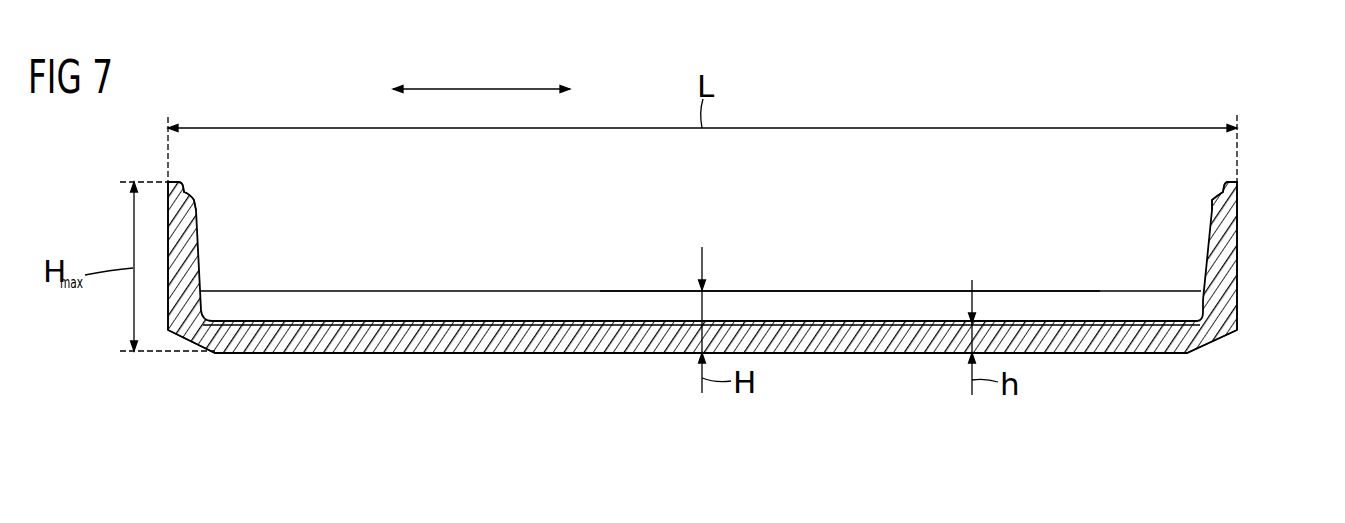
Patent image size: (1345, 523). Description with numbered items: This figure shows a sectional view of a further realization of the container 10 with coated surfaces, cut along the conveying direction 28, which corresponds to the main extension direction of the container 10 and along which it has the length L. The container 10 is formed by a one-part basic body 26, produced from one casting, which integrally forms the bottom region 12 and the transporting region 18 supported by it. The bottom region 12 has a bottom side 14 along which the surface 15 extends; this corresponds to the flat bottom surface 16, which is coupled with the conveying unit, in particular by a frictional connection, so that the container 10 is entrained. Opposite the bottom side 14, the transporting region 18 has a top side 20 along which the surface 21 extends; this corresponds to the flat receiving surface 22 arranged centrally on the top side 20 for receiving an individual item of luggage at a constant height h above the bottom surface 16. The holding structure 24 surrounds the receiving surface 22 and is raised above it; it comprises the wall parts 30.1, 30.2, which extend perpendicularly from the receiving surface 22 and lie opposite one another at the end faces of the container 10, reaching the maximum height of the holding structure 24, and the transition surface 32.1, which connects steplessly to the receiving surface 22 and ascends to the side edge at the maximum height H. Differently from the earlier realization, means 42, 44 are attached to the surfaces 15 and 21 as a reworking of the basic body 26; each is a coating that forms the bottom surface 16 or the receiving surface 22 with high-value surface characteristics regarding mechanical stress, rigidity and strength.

The container 10 is at (1273, 80).
The bottom region 12 is at (1217, 365).
The bottom side 14 is at (265, 365).
The surface 15 is at (510, 356).
The bottom surface 16 is at (365, 356).
The transporting region 18 is at (1252, 204).
The top side 20 is at (1086, 195).
The surface 21 is at (369, 321).
The receiving surface 22 is at (833, 321).
The holding structure 24 is at (160, 208).
The basic body 26 is at (1239, 268).
The conveying direction 28 is at (483, 89).
The wall part 30.1 is at (167, 240).
The wall part 30.2 is at (1239, 225).
The transition surface 32.1 is at (513, 308).
The means (coating) 42 is at (848, 356).
The means (coating) 44 is at (418, 321).